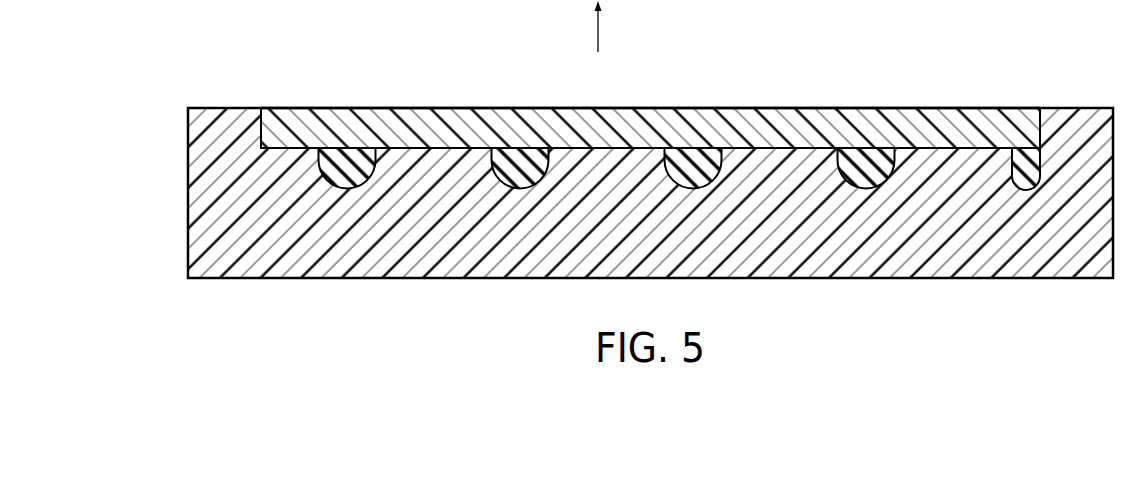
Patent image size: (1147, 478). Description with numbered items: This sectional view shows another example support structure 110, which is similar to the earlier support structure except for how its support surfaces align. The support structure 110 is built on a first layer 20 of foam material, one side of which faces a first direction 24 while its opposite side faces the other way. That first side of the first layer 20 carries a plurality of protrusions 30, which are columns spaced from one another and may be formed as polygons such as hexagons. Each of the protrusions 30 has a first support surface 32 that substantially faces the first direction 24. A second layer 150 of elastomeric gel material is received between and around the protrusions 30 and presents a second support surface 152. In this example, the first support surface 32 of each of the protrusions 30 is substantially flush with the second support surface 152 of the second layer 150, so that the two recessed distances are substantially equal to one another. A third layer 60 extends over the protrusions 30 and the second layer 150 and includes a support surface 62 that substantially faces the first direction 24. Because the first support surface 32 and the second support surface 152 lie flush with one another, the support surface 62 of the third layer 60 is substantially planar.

The first layer of foam material 20 is at (584, 193).
The first direction 24 is at (598, 30).
The protrusions 30 is at (470, 150).
The first support surface 32 is at (680, 121).
The third layer 60 is at (664, 107).
The support surface 62 is at (650, 84).
The support structure 110 is at (584, 139).
The second layer 150 is at (656, 122).
The second support surface 152 is at (343, 155).